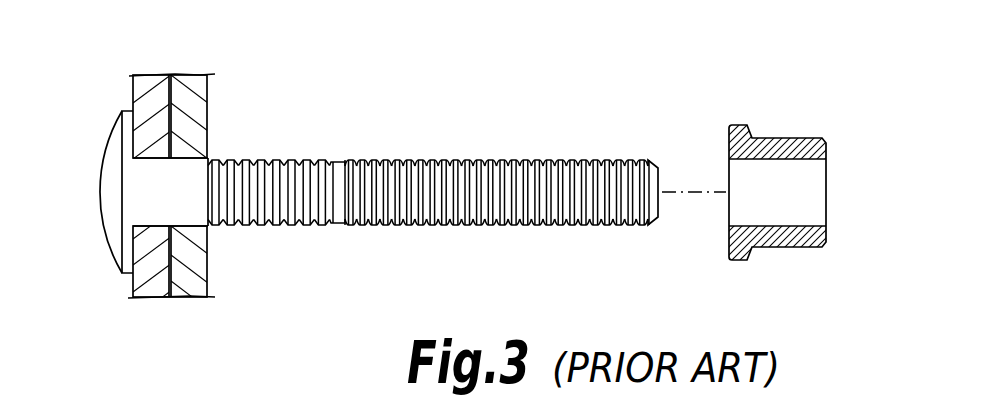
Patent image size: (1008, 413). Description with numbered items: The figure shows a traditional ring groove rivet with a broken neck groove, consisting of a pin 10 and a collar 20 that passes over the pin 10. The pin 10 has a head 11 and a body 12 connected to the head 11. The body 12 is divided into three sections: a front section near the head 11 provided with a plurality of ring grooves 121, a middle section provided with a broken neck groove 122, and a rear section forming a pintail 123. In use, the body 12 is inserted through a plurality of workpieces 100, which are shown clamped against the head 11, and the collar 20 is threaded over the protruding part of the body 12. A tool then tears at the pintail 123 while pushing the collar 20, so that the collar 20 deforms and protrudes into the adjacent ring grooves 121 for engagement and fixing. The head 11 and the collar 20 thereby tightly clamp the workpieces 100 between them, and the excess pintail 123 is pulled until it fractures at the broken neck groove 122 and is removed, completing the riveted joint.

The pin 10 is at (488, 70).
The head 11 is at (107, 163).
The body 12 is at (654, 138).
The ring grooves 121 is at (255, 227).
The broken neck groove 122 is at (333, 227).
The pintail 123 is at (515, 225).
The workpieces 100 is at (133, 85).
The collar 20 is at (803, 133).